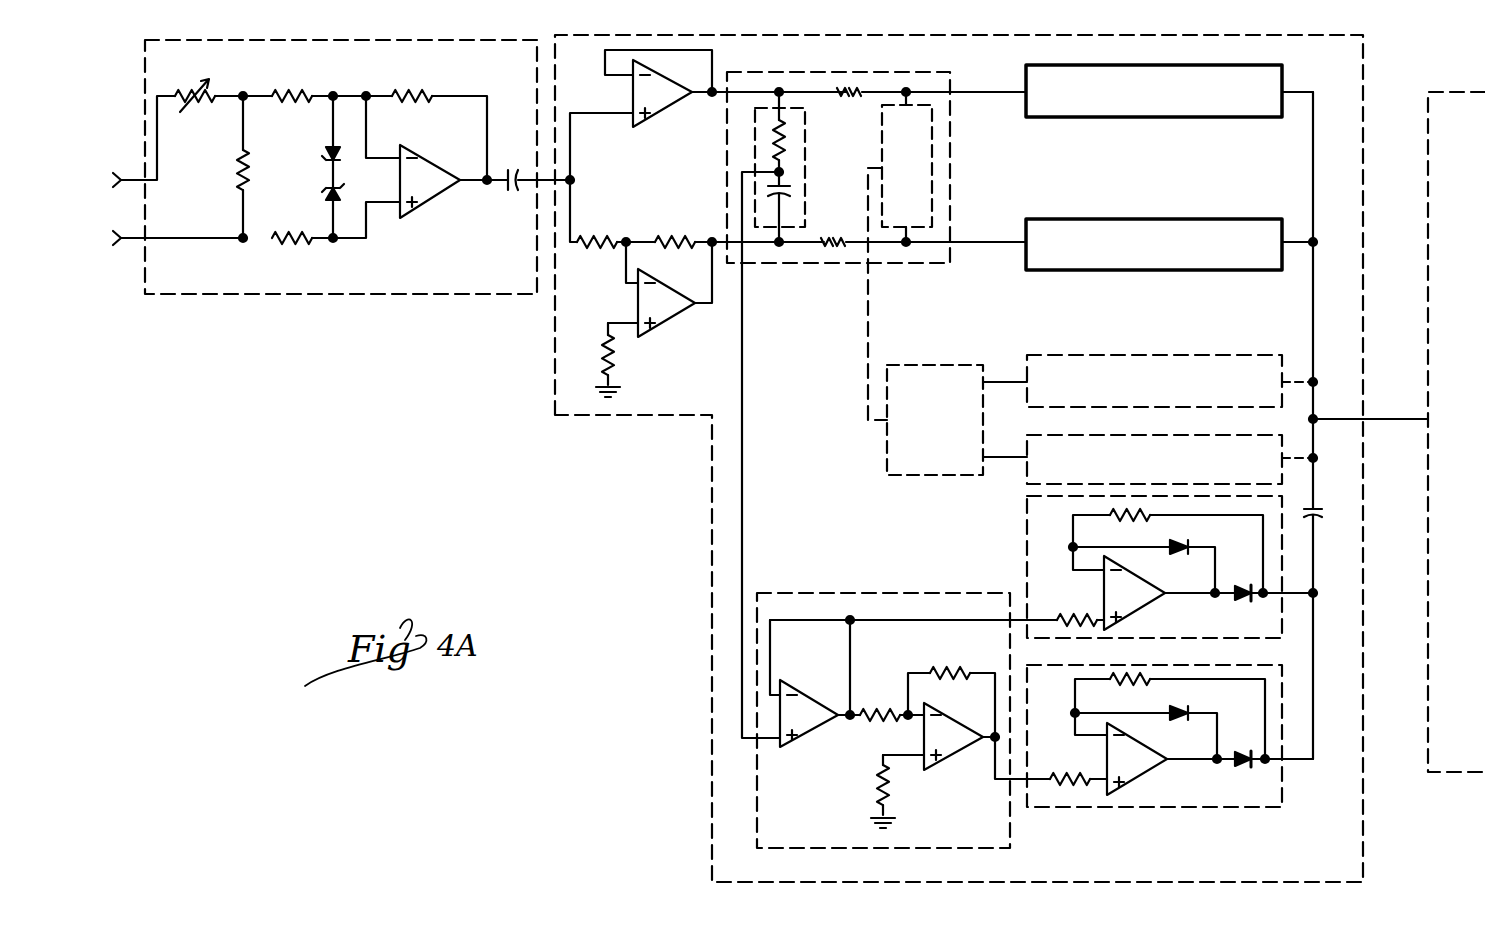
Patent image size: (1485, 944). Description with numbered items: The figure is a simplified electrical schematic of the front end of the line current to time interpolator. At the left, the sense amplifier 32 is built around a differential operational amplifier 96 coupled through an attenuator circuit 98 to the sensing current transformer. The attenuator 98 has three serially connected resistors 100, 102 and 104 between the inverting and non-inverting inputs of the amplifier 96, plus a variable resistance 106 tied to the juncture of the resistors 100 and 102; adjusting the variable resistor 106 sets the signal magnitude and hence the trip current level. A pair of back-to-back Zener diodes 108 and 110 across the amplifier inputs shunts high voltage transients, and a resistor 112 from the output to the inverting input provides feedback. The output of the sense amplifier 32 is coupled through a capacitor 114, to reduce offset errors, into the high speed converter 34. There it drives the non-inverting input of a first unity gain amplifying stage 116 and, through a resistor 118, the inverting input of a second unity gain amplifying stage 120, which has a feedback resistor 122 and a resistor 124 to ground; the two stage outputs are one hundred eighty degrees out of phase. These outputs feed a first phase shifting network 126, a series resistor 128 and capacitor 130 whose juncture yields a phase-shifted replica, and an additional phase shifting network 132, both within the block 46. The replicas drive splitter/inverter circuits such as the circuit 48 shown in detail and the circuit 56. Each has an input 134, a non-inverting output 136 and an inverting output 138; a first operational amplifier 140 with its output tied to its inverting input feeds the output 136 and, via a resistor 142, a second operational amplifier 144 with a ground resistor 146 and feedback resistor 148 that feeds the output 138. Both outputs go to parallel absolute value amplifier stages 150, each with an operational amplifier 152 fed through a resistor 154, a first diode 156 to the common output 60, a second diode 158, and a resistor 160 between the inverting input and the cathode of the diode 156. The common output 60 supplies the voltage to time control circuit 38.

The sense amplifier 32 is at (392, 297).
The high speed converter 34 is at (710, 483).
The voltage to time control circuit 38 is at (1428, 745).
The phase shifting network 46 is at (815, 265).
The splitter/inverter circuit 48 is at (801, 850).
The splitter/inverter circuit 56 is at (923, 372).
The common output 60 is at (1352, 422).
The differential operational amplifier 96 is at (440, 176).
The attenuator circuit 98 is at (305, 84).
The resistor 100 is at (299, 105).
The resistor 102 is at (236, 172).
The resistor 104 is at (301, 251).
The variable resistance 106 is at (207, 106).
The Zener diode 108 is at (326, 160).
The Zener diode 110 is at (326, 196).
The feedback resistor 112 is at (411, 90).
The capacitor 114 is at (512, 191).
The first unity gain amplifying stage 116 is at (681, 98).
The resistor 118 is at (600, 242).
The second unity gain amplifying stage 120 is at (672, 314).
The resistor 122 is at (695, 242).
The resistor 124 is at (618, 373).
The first phase shifting network 126 is at (755, 146).
The resistor 128 is at (796, 127).
The capacitor 130 is at (796, 190).
The additional phase shifting network 132 is at (916, 171).
The input 134 is at (868, 376).
The non-inverting output 136 is at (998, 381).
The inverting output 138 is at (1010, 462).
The first operational amplifier 140 is at (822, 681).
The resistor 142 is at (882, 723).
The second operational amplifier 144 is at (955, 772).
The resistor 146 is at (878, 794).
The resistor 148 is at (966, 672).
The absolute value amplifier stage 150 is at (1162, 101).
The operational amplifier 152 is at (1150, 596).
The resistor 154 is at (1082, 600).
The first diode 156 is at (1243, 785).
The second diode 158 is at (1180, 546).
The resistor 160 is at (1169, 634).